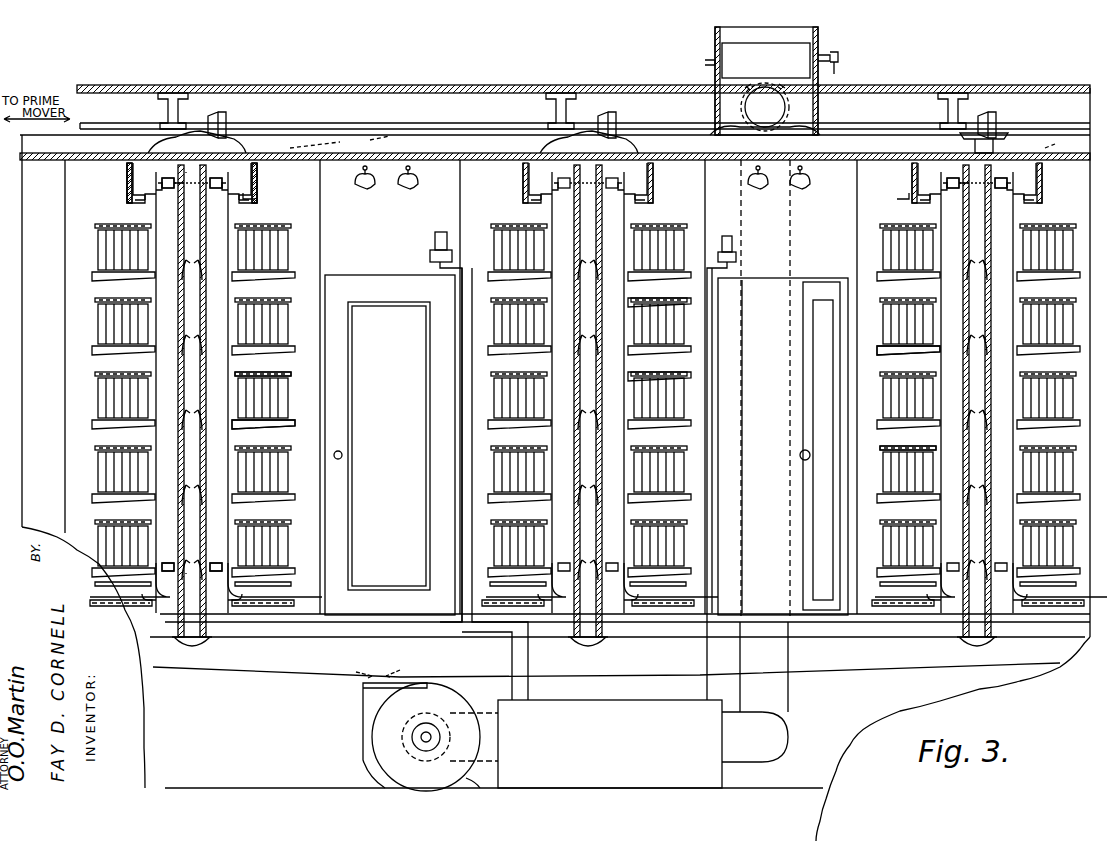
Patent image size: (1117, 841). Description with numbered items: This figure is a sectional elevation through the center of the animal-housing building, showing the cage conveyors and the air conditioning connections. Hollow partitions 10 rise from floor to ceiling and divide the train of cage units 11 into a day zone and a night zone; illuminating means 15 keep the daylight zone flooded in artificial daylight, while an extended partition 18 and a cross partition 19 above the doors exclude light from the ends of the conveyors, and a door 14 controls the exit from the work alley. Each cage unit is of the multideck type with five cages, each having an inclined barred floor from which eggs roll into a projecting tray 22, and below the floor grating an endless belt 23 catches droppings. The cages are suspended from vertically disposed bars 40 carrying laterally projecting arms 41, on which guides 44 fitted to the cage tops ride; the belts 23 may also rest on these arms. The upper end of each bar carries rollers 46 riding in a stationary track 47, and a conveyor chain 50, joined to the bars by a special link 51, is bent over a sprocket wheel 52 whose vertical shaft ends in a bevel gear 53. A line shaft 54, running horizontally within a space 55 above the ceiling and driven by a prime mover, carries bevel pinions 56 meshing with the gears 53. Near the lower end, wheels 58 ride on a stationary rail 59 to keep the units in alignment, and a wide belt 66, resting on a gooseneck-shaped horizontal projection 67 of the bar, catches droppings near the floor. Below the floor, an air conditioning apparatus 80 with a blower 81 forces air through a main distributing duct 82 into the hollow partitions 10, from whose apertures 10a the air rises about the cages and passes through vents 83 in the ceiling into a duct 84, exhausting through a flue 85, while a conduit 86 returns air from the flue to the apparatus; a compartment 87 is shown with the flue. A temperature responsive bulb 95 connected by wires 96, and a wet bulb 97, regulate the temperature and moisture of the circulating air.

The partition 10 is at (180, 322).
The apertures 10a is at (190, 344).
The cage units 11 is at (276, 392).
The door 14 is at (586, 445).
The illuminating means 15 is at (406, 184).
The extended partition 18 is at (320, 256).
The cross partition 19 is at (601, 232).
The projecting tray 22 is at (884, 346).
The endless belt 23 is at (286, 372).
The vertically disposed bar 40 is at (230, 352).
The laterally projecting arms 41 is at (286, 430).
The guides 44 is at (672, 368).
The rollers 46 is at (130, 200).
The stationary track 47 is at (262, 204).
The conveyor chain 50 is at (224, 180).
The special link 51 is at (162, 180).
The sprocket wheel 52 is at (178, 186).
The bevel gear 53 is at (990, 142).
The line shaft 54 is at (462, 140).
The space 55 is at (420, 86).
The bevel pinion 56 is at (1000, 122).
The wheels 58 is at (216, 564).
The stationary rail 59 is at (206, 566).
The wide belt 66 is at (266, 592).
The gooseneck-shaped horizontal projection 67 is at (276, 604).
The air conditioning apparatus 80 is at (610, 744).
The blower 81 is at (382, 734).
The main distributing duct 82 is at (617, 657).
The vents 83 is at (226, 152).
The duct 84 is at (310, 132).
The flue 85 is at (810, 40).
The conduit 86 is at (734, 92).
The housing compartment 87 is at (730, 50).
The temperature responsive bulb 95 is at (479, 458).
The wires 96 is at (478, 445).
The wet bulb 97 is at (748, 461).